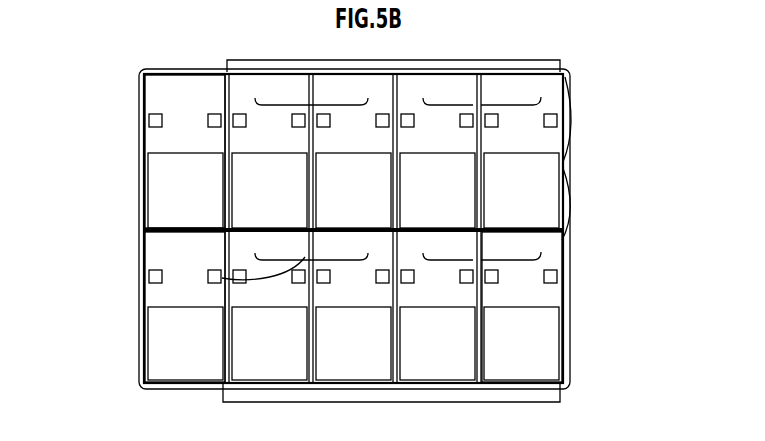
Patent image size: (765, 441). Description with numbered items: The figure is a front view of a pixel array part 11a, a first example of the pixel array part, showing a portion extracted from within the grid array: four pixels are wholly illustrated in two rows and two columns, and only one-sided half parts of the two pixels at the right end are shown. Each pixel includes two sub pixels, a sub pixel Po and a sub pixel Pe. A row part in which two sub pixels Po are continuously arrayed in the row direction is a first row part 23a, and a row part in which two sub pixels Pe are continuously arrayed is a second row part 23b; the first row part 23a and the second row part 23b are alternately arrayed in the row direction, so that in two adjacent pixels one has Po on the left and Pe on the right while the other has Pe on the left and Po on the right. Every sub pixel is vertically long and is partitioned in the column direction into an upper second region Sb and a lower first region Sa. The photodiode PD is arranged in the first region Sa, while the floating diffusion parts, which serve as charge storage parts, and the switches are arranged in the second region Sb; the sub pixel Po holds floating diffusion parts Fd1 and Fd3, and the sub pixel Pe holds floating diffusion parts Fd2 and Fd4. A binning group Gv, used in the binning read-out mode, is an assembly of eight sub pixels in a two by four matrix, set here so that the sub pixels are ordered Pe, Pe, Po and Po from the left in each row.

The pixel array part 11a is at (110, 192).
The binning group Gv is at (447, 55).
The second region Sb is at (160, 87).
The first region Sa is at (160, 172).
The sub pixel Po is at (358, 169).
The sub pixel Pe is at (311, 169).
The floating diffusion part Fd1 is at (330, 210).
The floating diffusion part Fd2 is at (288, 210).
The floating diffusion part Fd3 is at (379, 210).
The floating diffusion part Fd4 is at (337, 210).
The photodiode PD is at (353, 266).
The first row part 23a is at (487, 123).
The second row part 23b is at (327, 122).